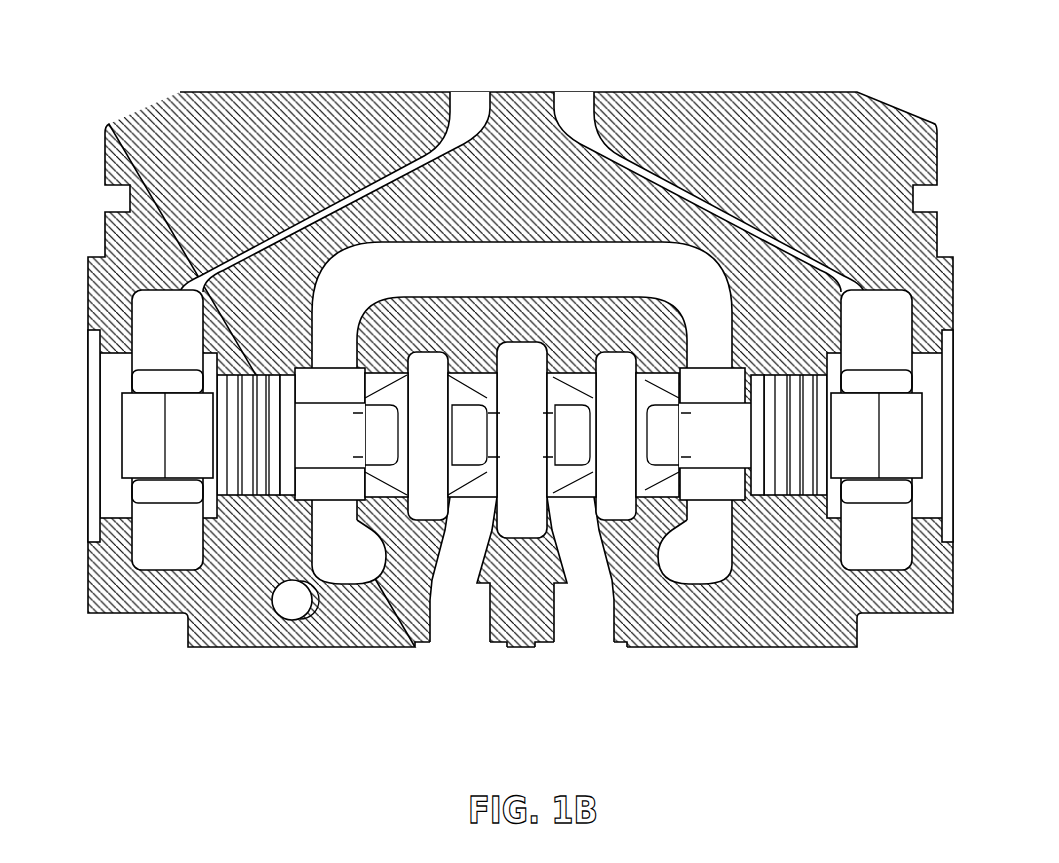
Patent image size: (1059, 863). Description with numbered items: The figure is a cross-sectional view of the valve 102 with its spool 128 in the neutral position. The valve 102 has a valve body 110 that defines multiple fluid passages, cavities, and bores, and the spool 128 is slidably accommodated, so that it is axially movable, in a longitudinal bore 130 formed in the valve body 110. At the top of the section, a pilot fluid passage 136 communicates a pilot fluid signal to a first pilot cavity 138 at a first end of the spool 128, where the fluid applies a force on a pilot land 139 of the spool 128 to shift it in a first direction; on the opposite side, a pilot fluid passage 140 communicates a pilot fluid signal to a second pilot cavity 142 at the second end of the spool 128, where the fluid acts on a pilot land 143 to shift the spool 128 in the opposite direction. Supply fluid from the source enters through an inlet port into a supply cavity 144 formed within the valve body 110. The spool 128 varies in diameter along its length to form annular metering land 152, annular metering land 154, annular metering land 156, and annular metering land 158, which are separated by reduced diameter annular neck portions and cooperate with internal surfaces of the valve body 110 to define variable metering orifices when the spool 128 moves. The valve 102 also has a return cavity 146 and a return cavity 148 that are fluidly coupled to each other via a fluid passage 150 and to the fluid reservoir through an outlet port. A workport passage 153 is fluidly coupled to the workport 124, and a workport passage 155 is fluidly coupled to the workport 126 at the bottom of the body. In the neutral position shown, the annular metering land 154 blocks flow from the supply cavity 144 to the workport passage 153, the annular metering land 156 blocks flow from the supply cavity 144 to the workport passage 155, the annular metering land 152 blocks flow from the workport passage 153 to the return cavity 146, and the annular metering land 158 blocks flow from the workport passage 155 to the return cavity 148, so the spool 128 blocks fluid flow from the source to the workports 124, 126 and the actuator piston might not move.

The valve 102 is at (118, 102).
The valve body 110 is at (695, 92).
The workport 124 is at (581, 654).
The workport 126 is at (469, 654).
The spool 128 is at (116, 403).
The longitudinal bore 130 is at (238, 480).
The pilot fluid passage 136 is at (579, 108).
The first pilot cavity 138 is at (885, 557).
The pilot land 139 is at (785, 480).
The pilot fluid passage 140 is at (467, 108).
The second pilot cavity 142 is at (156, 557).
The pilot land 143 is at (291, 382).
The supply cavity 144 is at (522, 521).
The return cavity 146 is at (697, 563).
The return cavity 148 is at (346, 558).
The fluid passage 150 is at (539, 266).
The annular metering land 152 is at (651, 386).
The workport passage 153 is at (600, 566).
The annular metering land 154 is at (584, 386).
The workport passage 155 is at (428, 566).
The annular metering land 156 is at (461, 384).
The annular metering land 158 is at (385, 391).